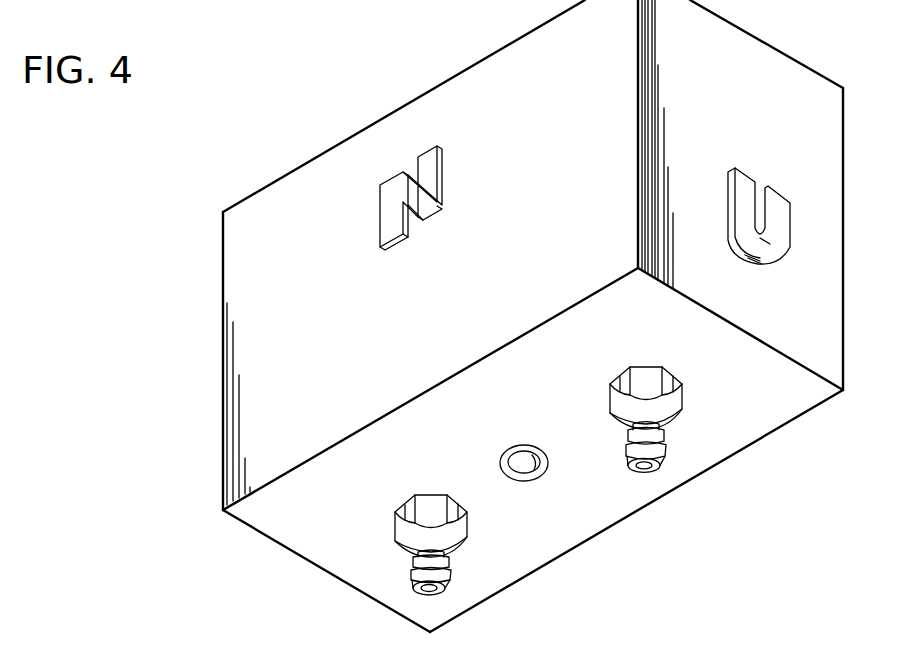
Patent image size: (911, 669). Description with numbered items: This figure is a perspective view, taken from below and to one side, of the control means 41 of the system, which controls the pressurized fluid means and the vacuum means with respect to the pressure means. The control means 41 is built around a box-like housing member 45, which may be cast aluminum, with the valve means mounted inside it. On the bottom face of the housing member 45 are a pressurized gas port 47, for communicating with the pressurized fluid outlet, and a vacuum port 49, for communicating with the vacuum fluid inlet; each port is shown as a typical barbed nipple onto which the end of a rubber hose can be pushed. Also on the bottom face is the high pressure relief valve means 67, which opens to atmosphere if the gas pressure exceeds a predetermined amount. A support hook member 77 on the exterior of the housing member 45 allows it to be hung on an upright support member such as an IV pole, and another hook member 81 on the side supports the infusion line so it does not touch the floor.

The control means 41 is at (308, 104).
The housing member 45 is at (240, 232).
The pressurized gas port 47 is at (461, 566).
The vacuum port 49 is at (686, 442).
The high pressure relief valve means 67 is at (532, 475).
The support hook member 77 is at (388, 193).
The hook member 81 is at (780, 212).